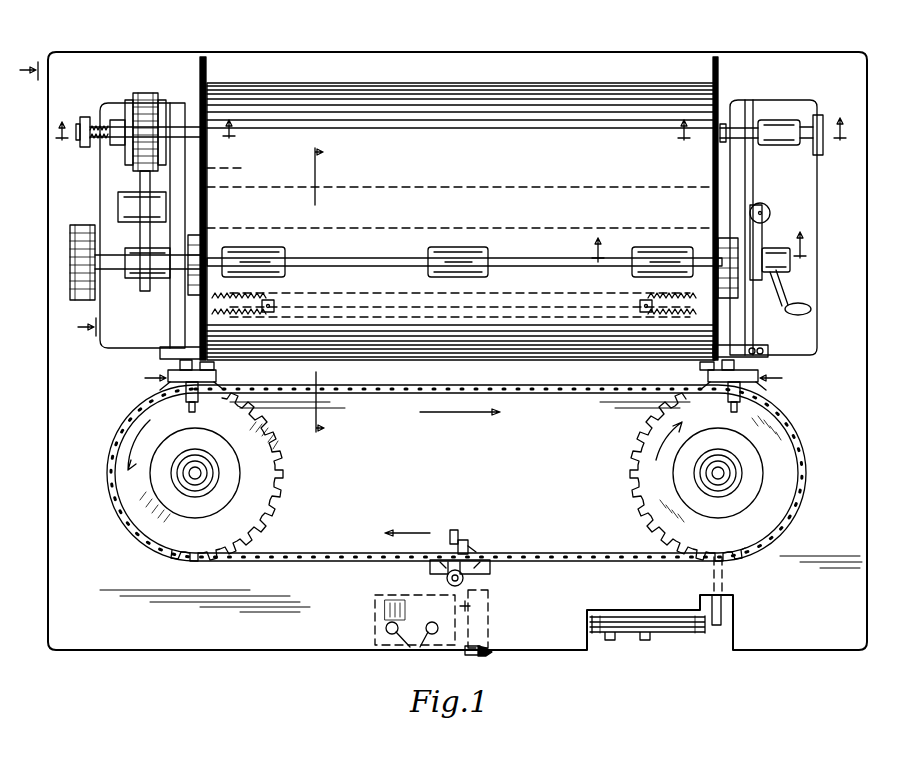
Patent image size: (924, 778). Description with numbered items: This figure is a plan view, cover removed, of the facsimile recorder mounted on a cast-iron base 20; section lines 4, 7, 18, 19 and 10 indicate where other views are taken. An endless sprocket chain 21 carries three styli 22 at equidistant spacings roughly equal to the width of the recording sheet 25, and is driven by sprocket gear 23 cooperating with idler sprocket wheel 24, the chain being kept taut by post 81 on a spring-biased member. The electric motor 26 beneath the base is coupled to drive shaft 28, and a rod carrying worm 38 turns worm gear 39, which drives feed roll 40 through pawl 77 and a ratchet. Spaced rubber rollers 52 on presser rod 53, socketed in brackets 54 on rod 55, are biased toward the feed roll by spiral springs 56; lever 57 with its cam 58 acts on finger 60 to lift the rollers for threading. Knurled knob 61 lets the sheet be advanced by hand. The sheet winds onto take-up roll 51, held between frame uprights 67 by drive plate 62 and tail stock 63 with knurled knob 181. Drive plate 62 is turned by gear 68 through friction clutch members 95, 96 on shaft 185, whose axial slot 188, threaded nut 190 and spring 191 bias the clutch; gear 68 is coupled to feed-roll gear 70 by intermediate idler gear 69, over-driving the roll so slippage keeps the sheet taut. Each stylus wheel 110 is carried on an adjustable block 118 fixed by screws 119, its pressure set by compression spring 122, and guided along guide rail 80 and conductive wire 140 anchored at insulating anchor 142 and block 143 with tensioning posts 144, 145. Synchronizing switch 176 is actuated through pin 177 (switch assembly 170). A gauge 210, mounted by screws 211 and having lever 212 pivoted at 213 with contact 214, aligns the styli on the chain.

The section line 10- 10 is at (49, 199).
The section line 4- 4 is at (330, 287).
The section line 7- 7 is at (701, 244).
The section line 18- 18 is at (761, 118).
The section line 19- 19 is at (145, 120).
The cast-iron base 20 is at (866, 385).
The sprocket chain 21 is at (452, 398).
The stylus 22 is at (482, 526).
The sprocket gear 23 is at (632, 466).
The idler sprocket wheel 24 is at (282, 452).
The recording sheet 25 is at (461, 221).
The electric motor 26 is at (492, 352).
The drive shaft 28 is at (730, 464).
The worm 38 is at (767, 206).
The worm gear 39 is at (770, 210).
The feed roll 40 is at (720, 236).
The take-up roll 51 is at (722, 82).
The rubber rollers 52 is at (262, 250).
The presser rod 53 is at (548, 252).
The brackets 54 is at (190, 290).
The rod 55 is at (488, 312).
The spiral spring 56 is at (686, 318).
The lever 57 is at (810, 308).
The cam 58 is at (236, 318).
The finger 60 is at (782, 284).
The knurled knob 61 is at (70, 228).
The drive plate 62 is at (198, 100).
The tail stock 63 is at (778, 120).
The frame uprights 67 is at (170, 338).
The gear 68 is at (146, 92).
The intermediate idler gear 69 is at (140, 183).
The gear 70 is at (140, 300).
The pawl 77 is at (762, 250).
The guide rail 80 is at (477, 422).
The post 81 is at (210, 456).
The clutch member 95 is at (129, 100).
The clutch member 96 is at (163, 100).
The stylus wheel 110 is at (215, 368).
The block 118 is at (188, 398).
The screws 119 is at (430, 572).
The compression spring 122 is at (452, 532).
The conductive wire 140 is at (409, 370).
The anchor 142 is at (160, 356).
The block 143 is at (768, 346).
The tensioning post 144 is at (756, 358).
The tensioning post 145 is at (764, 351).
The switch assembly 170 is at (718, 628).
The synchronizing switch 176 is at (738, 474).
The pin 177 is at (722, 610).
The knurled knob 181 is at (822, 148).
The shaft 185 is at (80, 140).
The axial slot 188 is at (78, 136).
The threaded nut 190 is at (86, 116).
The spring 191 is at (98, 142).
The gauge 210 is at (375, 632).
The screws 211 is at (412, 645).
The lever 212 is at (486, 590).
The pivot 213 is at (478, 608).
The actuator contact 214 is at (488, 648).